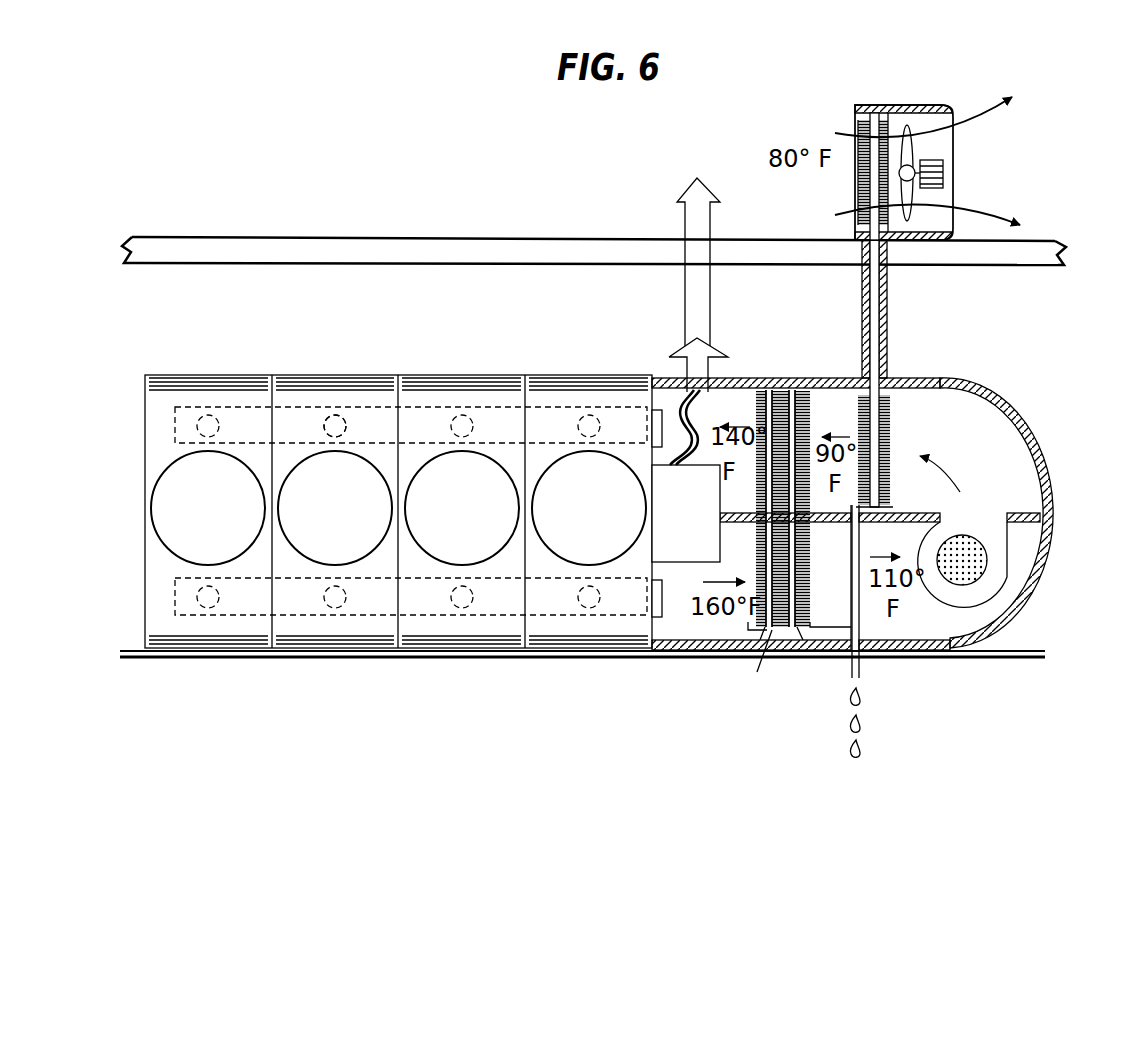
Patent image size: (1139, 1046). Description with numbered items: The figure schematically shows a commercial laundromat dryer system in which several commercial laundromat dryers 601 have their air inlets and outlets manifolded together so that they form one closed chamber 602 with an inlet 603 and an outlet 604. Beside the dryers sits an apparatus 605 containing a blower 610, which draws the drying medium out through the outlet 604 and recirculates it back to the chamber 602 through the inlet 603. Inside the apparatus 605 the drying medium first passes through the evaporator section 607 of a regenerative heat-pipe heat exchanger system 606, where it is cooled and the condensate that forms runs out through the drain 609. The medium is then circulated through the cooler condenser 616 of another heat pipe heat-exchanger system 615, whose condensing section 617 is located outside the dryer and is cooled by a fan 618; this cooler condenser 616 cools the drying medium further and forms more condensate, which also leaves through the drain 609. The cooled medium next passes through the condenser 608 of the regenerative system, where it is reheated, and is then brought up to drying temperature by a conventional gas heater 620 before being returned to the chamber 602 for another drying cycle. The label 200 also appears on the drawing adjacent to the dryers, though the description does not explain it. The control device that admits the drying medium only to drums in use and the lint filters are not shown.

The commercial laundromat dryers 601 is at (218, 624).
The closed chamber 602 is at (333, 400).
The inlet 603 is at (658, 406).
The outlet 604 is at (652, 606).
The apparatus 605 is at (995, 400).
The regenerative heat-pipe heat exchanger system 606 is at (812, 405).
The evaporator section 607 is at (793, 630).
The condenser 608 is at (757, 466).
The drain 609 is at (862, 668).
The blower 610 is at (1008, 578).
The heat pipe heat-exchanger system 615 is at (887, 288).
The cooler condenser 616 is at (872, 427).
The condensing section 617 is at (856, 197).
The fan 618 is at (943, 175).
The gas heater 620 is at (690, 548).
The heat pipe assembly 200 is at (650, 441).